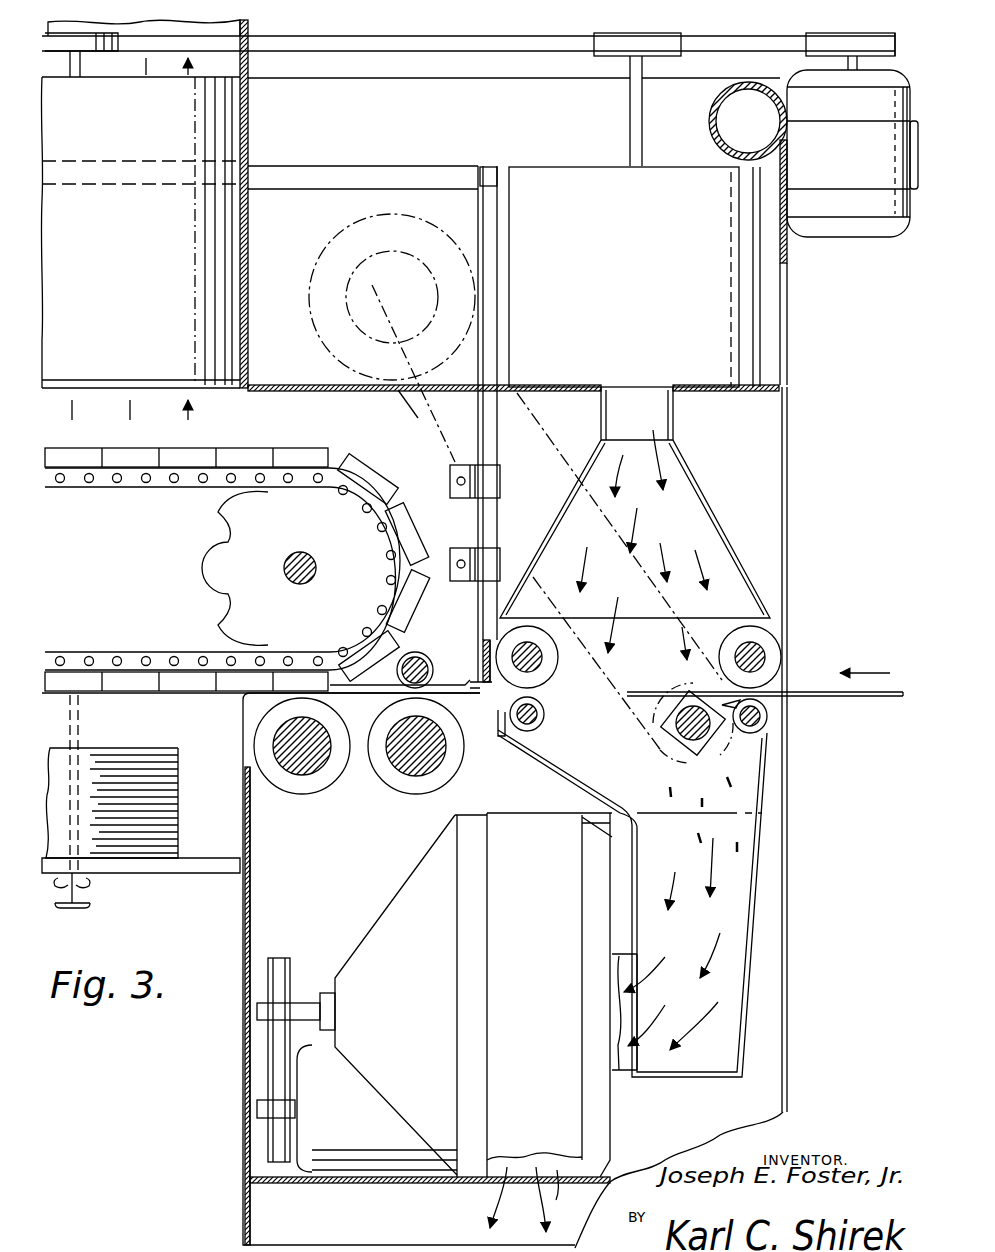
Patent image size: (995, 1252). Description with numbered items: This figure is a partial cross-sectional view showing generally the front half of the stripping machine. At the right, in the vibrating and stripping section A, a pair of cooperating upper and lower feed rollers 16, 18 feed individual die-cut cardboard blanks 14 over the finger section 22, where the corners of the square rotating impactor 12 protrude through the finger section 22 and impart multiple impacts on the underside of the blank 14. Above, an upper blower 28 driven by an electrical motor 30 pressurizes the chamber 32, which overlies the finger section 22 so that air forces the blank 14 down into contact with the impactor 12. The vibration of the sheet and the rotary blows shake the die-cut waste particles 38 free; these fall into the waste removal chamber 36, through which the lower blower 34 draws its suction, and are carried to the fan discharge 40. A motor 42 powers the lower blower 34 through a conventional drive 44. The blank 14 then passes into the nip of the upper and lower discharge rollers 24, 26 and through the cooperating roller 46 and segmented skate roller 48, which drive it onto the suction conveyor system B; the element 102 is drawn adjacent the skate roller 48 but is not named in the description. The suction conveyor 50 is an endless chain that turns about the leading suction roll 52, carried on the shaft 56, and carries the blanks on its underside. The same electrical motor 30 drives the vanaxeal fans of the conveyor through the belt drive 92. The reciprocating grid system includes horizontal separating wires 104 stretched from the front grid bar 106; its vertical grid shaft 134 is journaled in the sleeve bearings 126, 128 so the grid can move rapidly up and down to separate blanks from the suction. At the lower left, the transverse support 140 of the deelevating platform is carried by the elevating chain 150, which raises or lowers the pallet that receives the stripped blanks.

The belt drive 92 is at (482, 46).
The electrical motor 30 is at (855, 164).
The upper blower 28 is at (719, 317).
The chamber 32 is at (683, 517).
The sleeve bearing 126 is at (510, 472).
The vertical grid shaft 134 is at (478, 512).
The sleeve bearing 128 is at (478, 568).
The segmented skate roller 48 is at (440, 648).
The pulley shaft 102 is at (450, 668).
The separating wire 104 is at (395, 689).
The front grid bar 106 is at (490, 685).
The cardboard blank 14 is at (875, 700).
The suction conveyor 50 is at (172, 487).
The leading suction roll 52 is at (240, 540).
The shaft 56 is at (300, 552).
The suction conveyor system B is at (92, 645).
The vibrating and stripping section A is at (708, 640).
The upper feed roller 16 is at (775, 657).
The upper discharge roller 24 is at (550, 665).
The lower discharge roller 26 is at (545, 714).
The lower feed roller 18 is at (768, 717).
The impactor 12 is at (686, 742).
The finger section 22 is at (728, 730).
The waste removal chamber 36 is at (742, 793).
The waste particles 38 is at (735, 853).
The cooperating roller 46 is at (408, 786).
The lower blower 34 is at (400, 908).
The drive 44 is at (268, 1055).
The motor 42 is at (357, 1128).
The fan discharge 40 is at (534, 1199).
The elevating chain 150 is at (80, 730).
The transverse support 140 is at (82, 910).